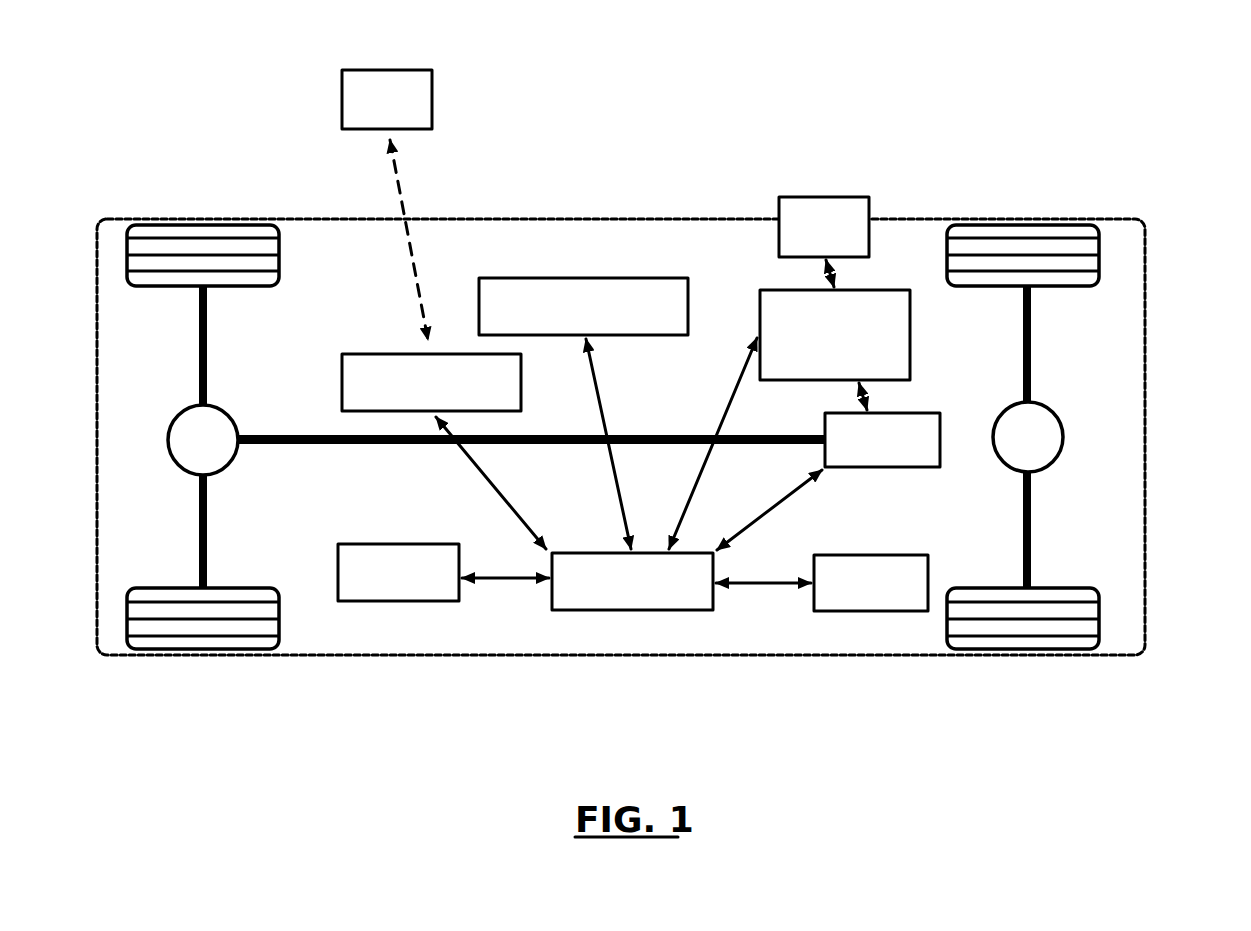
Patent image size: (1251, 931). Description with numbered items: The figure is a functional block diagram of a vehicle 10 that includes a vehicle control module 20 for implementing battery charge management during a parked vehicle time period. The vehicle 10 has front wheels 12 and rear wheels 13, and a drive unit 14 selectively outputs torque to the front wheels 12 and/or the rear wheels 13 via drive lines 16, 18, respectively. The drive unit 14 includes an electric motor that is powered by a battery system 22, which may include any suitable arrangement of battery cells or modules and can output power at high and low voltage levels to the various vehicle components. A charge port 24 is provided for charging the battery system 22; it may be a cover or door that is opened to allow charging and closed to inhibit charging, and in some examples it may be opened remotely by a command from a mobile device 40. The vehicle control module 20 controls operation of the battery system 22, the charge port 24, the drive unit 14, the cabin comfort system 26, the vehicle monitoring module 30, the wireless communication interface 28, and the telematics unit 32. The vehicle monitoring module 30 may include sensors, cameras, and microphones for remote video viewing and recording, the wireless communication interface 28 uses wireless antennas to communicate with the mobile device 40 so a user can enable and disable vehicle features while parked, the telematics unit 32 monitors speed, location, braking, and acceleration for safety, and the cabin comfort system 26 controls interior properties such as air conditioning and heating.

The vehicle 10 is at (1192, 262).
The front wheels 12 is at (1007, 224).
The rear wheels 13 is at (180, 224).
The drive unit 14 is at (897, 468).
The drive line 16 is at (1064, 437).
The drive line 18 is at (177, 418).
The vehicle control module 20 is at (650, 612).
The battery system 22 is at (891, 289).
The charge port 24 is at (826, 196).
The cabin comfort system 26 is at (868, 554).
The wireless communication interface 28 is at (372, 353).
The vehicle monitoring module 30 is at (585, 277).
The telematics unit 32 is at (363, 543).
The mobile device 40 is at (407, 69).